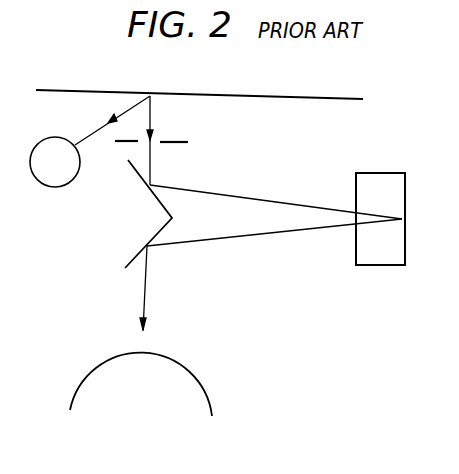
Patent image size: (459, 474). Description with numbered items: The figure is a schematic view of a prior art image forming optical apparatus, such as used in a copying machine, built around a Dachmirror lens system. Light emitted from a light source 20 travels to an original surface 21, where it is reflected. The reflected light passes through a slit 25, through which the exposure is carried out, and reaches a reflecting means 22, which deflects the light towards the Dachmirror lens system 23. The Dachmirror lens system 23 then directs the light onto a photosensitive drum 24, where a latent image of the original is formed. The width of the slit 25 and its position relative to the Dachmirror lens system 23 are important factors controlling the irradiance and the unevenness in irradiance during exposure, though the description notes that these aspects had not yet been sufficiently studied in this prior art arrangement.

The light source 20 is at (52, 188).
The original surface 21 is at (304, 87).
The reflecting means 22 is at (133, 168).
The Dachmirror lens system 23 is at (382, 172).
The photosensitive drum 24 is at (183, 343).
The slit 25 is at (178, 141).